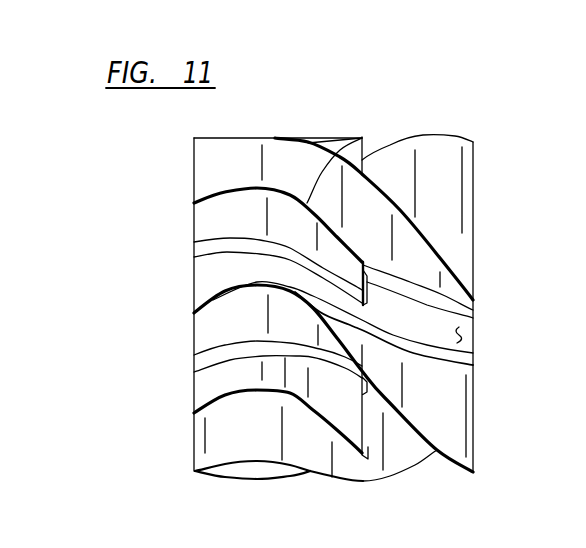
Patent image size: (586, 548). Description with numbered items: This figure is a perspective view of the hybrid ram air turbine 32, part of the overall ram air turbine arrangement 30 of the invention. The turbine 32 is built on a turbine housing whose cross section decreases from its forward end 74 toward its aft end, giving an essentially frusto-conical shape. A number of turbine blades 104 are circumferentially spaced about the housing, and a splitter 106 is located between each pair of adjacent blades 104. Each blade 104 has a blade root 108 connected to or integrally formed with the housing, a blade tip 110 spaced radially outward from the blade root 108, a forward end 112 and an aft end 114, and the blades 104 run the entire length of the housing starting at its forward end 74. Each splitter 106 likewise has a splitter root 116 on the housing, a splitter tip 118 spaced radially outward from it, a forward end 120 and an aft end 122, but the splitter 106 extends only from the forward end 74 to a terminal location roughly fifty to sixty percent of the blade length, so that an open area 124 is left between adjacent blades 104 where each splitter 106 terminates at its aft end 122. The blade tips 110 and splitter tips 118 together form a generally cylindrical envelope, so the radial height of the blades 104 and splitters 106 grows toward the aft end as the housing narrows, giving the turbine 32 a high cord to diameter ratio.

The auger assembly 30 is at (431, 539).
The hybrid ram air turbine 32 is at (118, 168).
The forward end 74 is at (193, 277).
The turbine blade 104 is at (324, 121).
The splitter 106 is at (140, 234).
The blade root 108 is at (465, 309).
The blade tip 110 is at (243, 139).
The forward end 112 is at (193, 179).
The aft end 114 is at (450, 262).
The splitter root 116 is at (204, 248).
The splitter tip 118 is at (362, 138).
The forward end 120 is at (193, 228).
The aft end 122 is at (367, 272).
The open area 124 is at (462, 336).